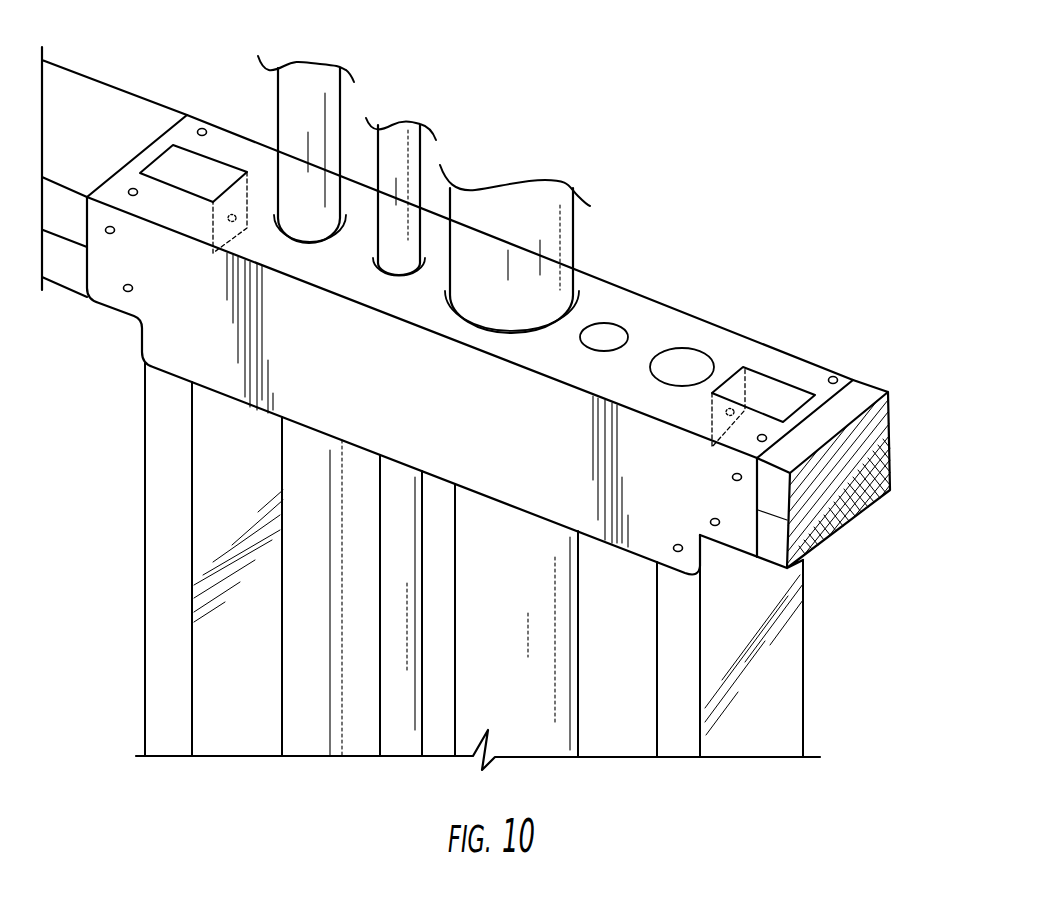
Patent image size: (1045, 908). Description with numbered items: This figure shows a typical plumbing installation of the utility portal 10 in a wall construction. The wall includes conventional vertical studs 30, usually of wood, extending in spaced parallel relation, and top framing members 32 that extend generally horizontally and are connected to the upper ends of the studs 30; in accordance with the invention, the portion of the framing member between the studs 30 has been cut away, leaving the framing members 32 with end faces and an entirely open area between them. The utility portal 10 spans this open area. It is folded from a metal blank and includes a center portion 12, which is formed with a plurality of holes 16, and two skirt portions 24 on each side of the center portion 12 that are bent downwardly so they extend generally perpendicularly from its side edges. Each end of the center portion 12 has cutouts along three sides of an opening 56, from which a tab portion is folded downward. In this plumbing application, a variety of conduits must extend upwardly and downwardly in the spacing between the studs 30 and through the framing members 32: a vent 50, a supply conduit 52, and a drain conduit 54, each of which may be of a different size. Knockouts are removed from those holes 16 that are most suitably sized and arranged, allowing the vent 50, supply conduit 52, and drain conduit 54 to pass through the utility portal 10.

The utility portal 10 is at (884, 294).
The center portion 12 is at (758, 345).
The openings 16 is at (400, 262).
The skirt portions 24 is at (160, 308).
The studs 30 is at (146, 656).
The top framing members 32 is at (890, 438).
The vent 50 is at (410, 137).
The supply conduit 52 is at (300, 180).
The drain conduit 54 is at (550, 233).
The opening 56 is at (183, 167).